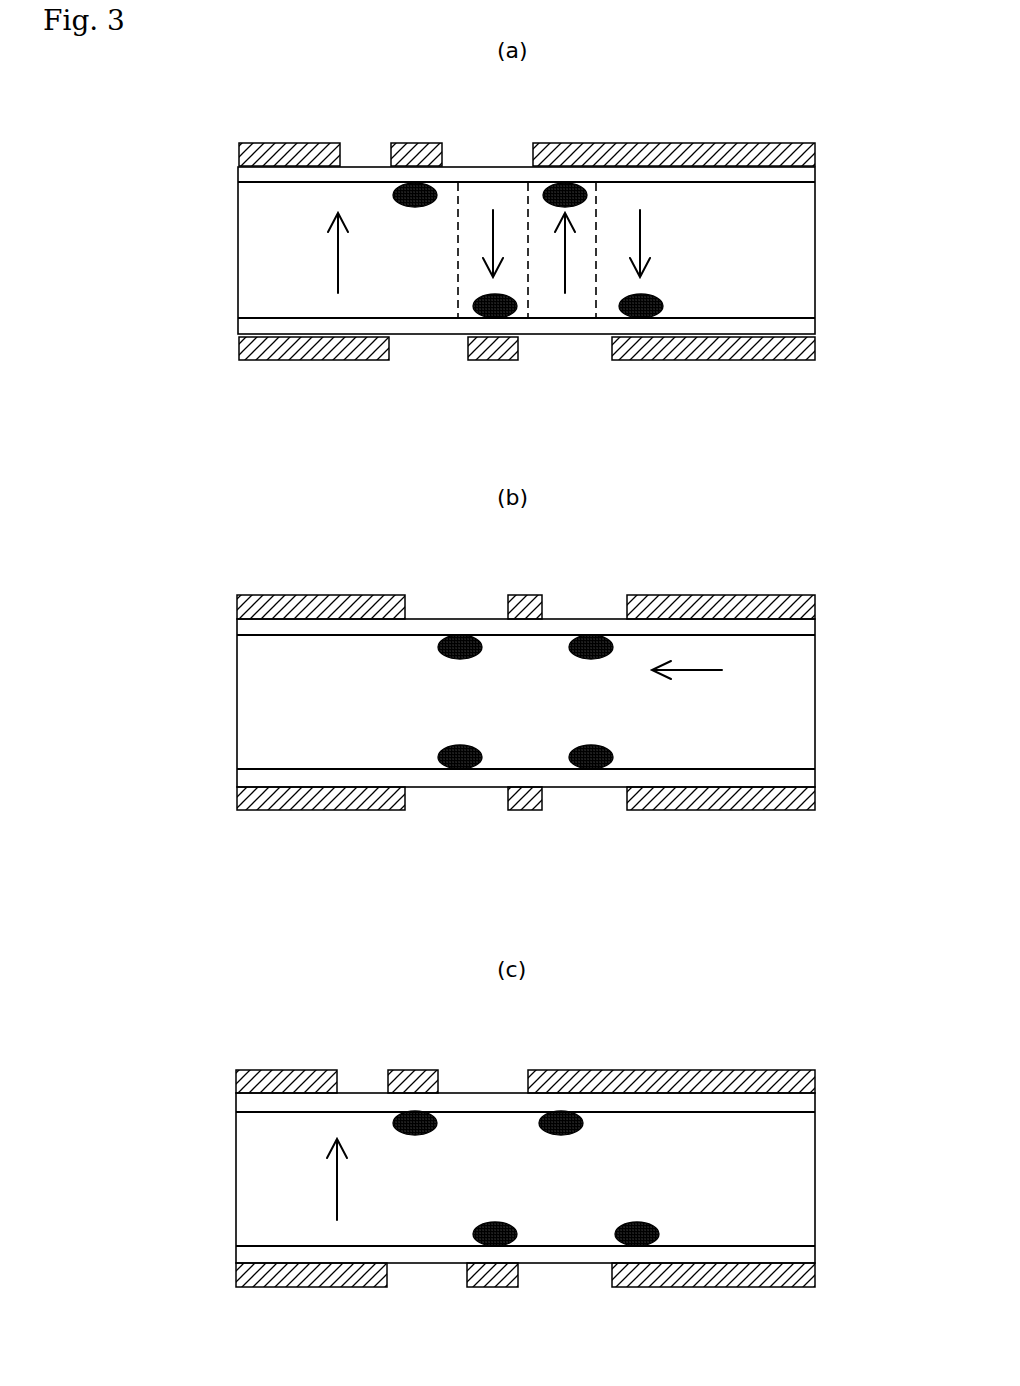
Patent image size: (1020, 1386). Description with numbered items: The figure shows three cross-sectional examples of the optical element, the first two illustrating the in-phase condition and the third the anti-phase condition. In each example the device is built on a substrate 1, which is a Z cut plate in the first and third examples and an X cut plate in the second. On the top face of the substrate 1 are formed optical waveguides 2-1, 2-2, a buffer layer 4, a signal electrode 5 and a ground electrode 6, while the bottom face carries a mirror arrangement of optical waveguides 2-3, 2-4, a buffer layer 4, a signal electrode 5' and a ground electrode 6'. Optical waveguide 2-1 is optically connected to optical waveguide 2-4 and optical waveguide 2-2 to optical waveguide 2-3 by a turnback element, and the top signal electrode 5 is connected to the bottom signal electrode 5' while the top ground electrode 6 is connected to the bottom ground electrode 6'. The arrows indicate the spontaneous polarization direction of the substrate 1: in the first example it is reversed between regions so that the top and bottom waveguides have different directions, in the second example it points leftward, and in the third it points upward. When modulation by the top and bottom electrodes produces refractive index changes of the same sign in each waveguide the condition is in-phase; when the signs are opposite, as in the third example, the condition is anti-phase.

The substrate 1 is at (760, 237).
The optical waveguide 2-1 is at (580, 183).
The optical waveguide 2-2 is at (407, 185).
The optical waveguide 2-3 is at (475, 320).
The optical waveguide 2-4 is at (640, 315).
The buffer layer 4 is at (253, 175).
The signal electrode 5 is at (475, 588).
The signal electrode 5' is at (508, 842).
The ground electrode 6 is at (513, 584).
The ground electrode 6' is at (541, 842).